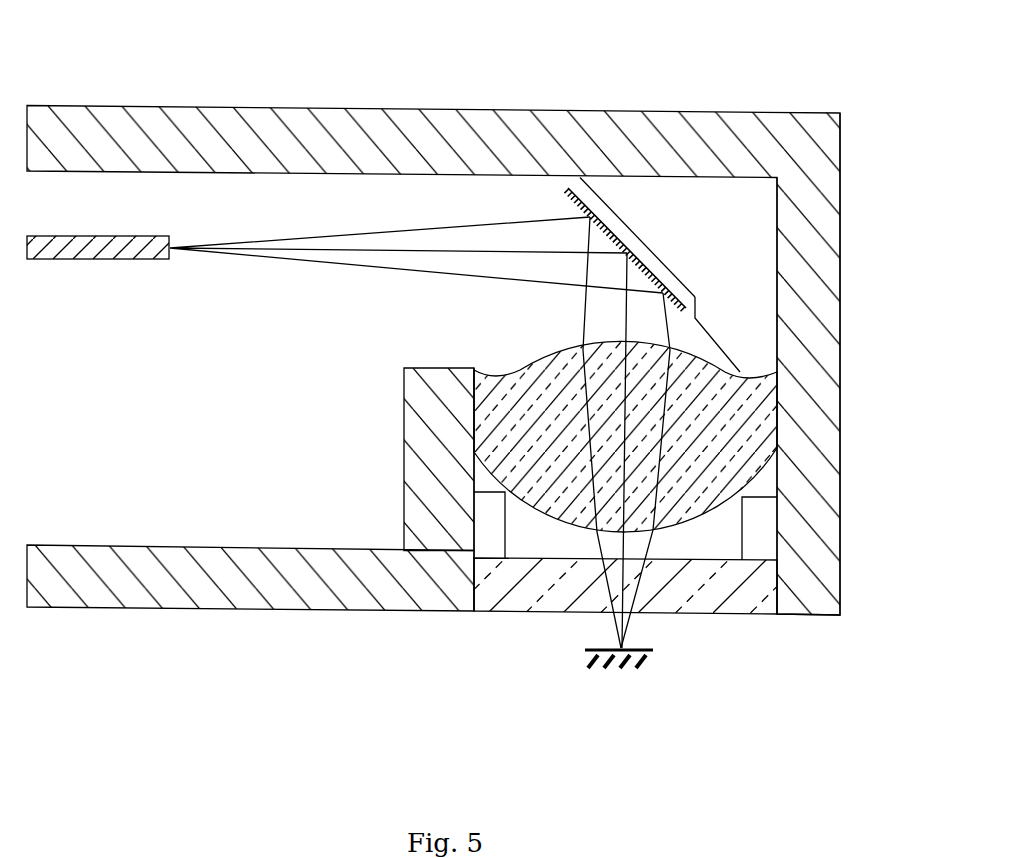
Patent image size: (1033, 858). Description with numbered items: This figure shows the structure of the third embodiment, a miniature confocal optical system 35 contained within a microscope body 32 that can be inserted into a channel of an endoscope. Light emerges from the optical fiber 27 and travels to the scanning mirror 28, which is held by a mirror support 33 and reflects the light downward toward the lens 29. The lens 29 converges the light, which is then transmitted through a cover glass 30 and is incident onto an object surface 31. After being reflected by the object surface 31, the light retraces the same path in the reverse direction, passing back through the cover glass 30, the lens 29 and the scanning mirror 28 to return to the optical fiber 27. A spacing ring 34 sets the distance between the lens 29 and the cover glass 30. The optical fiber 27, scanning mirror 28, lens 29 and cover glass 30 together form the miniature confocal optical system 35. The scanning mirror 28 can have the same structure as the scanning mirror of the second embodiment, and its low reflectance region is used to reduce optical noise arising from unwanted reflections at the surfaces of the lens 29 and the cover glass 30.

The optical fiber 27 is at (92, 259).
The scanning mirror 28 is at (570, 189).
The lens 29 is at (690, 427).
The cover glass 30 is at (687, 583).
The object surface 31 is at (645, 650).
The microscope body 32 is at (797, 222).
The mirror support 33 is at (740, 328).
The spacing ring 34 is at (758, 522).
The miniature confocal optical system 35 is at (852, 118).